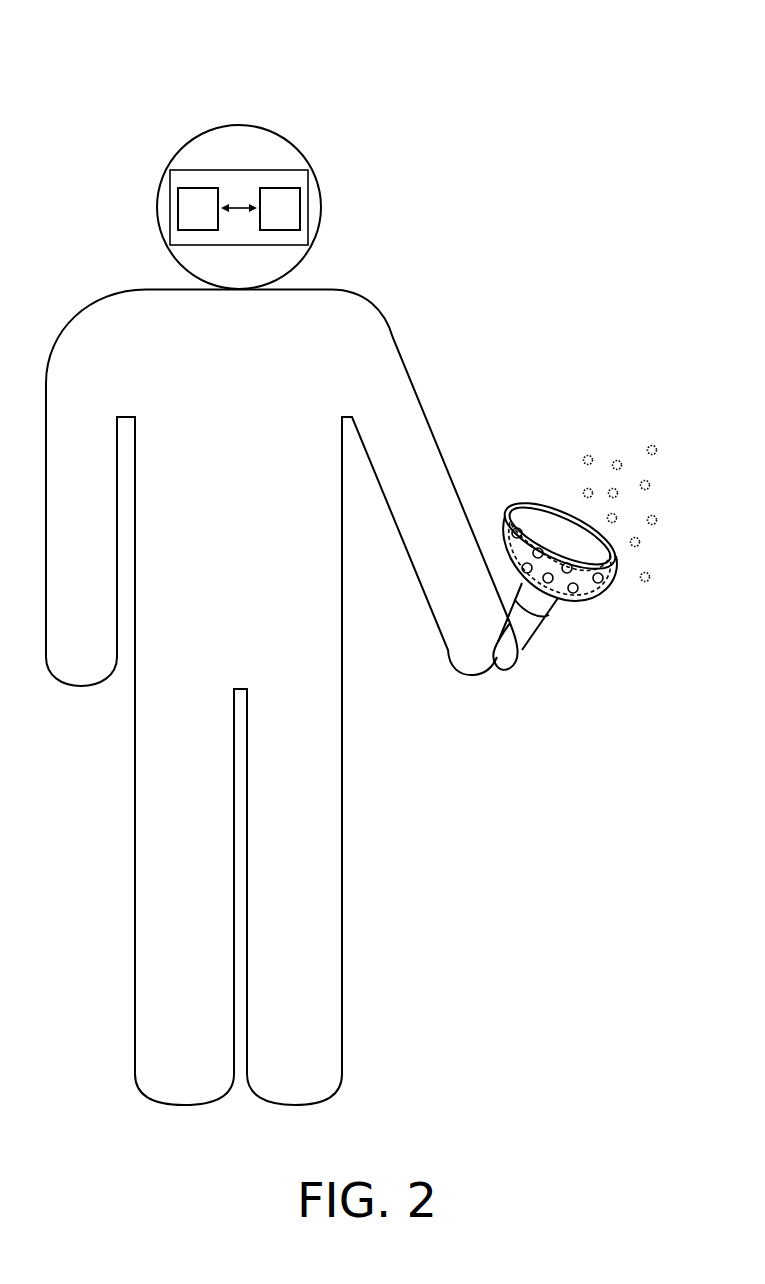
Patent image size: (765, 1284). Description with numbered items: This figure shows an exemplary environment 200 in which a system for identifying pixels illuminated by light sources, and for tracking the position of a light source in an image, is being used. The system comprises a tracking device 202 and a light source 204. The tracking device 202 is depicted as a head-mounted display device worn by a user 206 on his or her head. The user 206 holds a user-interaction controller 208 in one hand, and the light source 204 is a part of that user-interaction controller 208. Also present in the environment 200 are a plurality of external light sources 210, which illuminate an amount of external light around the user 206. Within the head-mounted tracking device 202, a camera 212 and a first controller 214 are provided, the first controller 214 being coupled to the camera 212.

The environment 200 is at (609, 59).
The tracking device 202 is at (201, 163).
The light source 204 is at (600, 597).
The user 206 is at (420, 392).
The user-interaction controller 208 is at (537, 640).
The external light sources 210 is at (658, 527).
The camera 212 is at (178, 217).
The first controller 214 is at (300, 198).